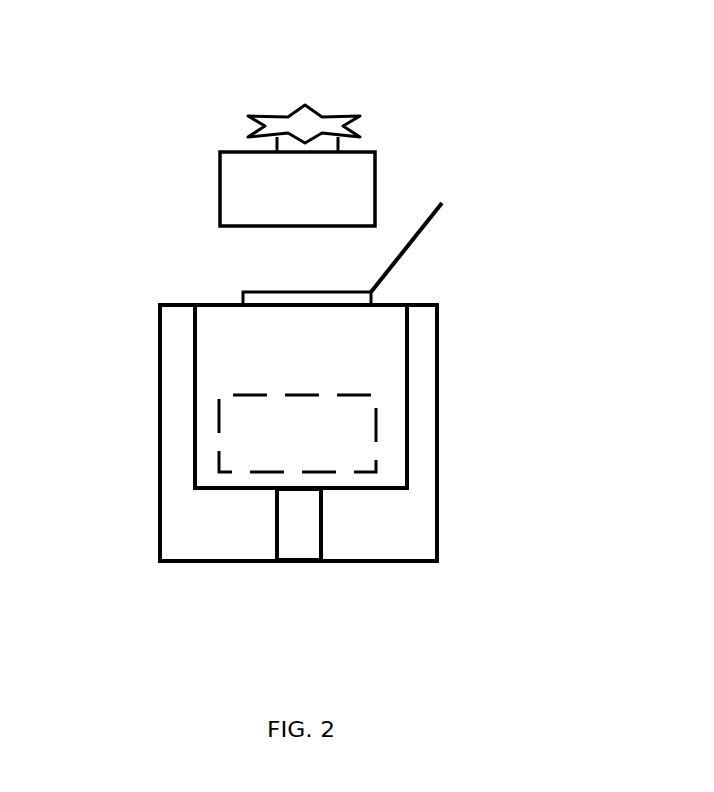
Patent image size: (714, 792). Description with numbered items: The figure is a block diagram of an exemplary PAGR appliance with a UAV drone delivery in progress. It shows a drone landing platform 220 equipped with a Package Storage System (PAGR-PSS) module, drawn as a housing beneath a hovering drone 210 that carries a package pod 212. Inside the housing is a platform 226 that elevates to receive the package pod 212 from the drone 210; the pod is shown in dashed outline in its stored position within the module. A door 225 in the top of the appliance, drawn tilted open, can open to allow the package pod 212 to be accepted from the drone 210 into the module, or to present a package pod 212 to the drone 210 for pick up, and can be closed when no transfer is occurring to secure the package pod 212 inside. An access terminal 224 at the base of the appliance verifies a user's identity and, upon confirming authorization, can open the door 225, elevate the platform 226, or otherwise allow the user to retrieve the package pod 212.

The drone 210 is at (325, 112).
The package pod 212 is at (220, 177).
The drone landing platform 220 is at (92, 300).
The access terminal 224 is at (307, 537).
The door 225 is at (410, 247).
The platform 226 is at (362, 490).